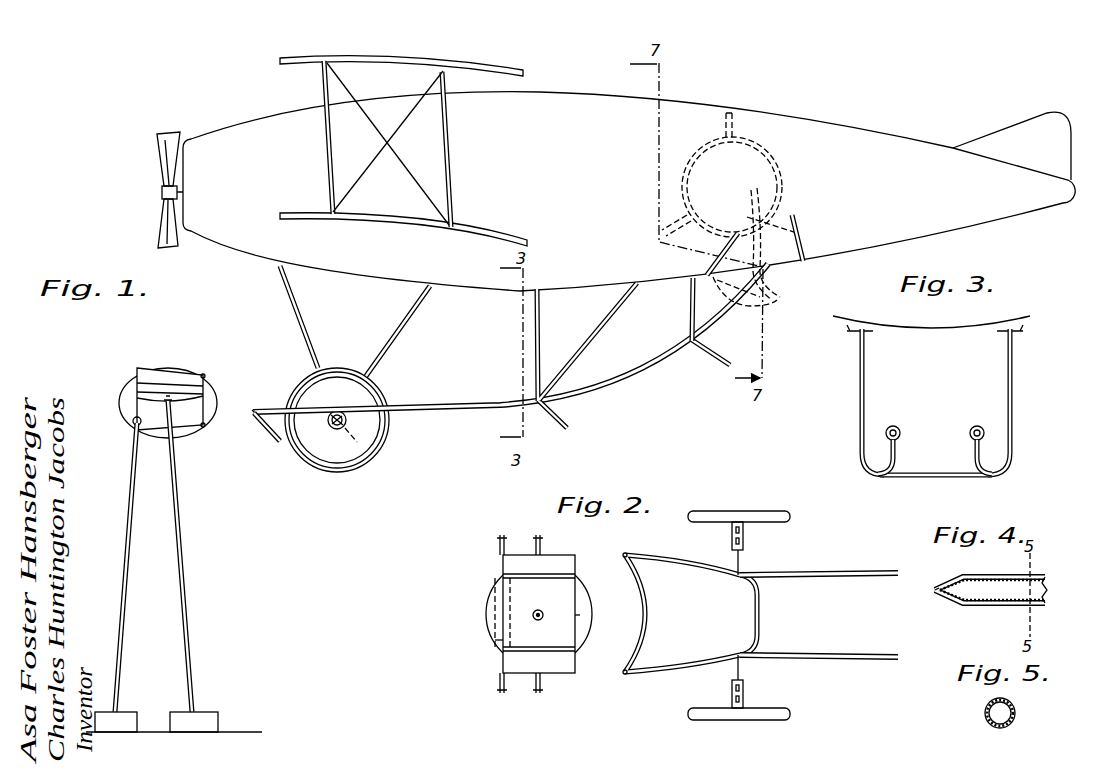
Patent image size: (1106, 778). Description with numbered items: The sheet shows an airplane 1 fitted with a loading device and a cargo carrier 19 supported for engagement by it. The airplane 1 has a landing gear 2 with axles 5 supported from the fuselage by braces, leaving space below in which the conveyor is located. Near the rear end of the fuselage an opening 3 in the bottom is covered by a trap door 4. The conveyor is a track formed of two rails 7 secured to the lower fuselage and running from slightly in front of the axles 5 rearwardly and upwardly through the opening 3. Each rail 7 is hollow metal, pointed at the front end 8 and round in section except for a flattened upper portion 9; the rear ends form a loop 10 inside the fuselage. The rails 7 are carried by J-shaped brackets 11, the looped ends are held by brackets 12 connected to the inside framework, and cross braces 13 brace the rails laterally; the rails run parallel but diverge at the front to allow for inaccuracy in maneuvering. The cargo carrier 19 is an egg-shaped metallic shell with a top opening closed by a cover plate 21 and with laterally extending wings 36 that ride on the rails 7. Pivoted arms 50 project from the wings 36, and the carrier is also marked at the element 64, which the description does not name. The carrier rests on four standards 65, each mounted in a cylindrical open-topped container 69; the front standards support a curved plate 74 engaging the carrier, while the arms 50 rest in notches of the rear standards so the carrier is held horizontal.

In FIG. 1, the airplane 1 is at (241, 128).
In FIG. 1, the landing gear 2 is at (312, 367).
In FIG. 1, the opening 3 is at (797, 264).
In FIG. 1, the trap door 4 is at (706, 266).
In FIG. 2, the axles 5 is at (744, 540).
In FIG. 1, the rails 7 is at (428, 409).
In FIG. 2, the rails 7 is at (835, 571).
In FIG. 4, the rails 7 is at (1012, 600).
In FIG. 5, the rails 7 is at (1016, 716).
In FIG. 1, the front end 8 is at (251, 404).
In FIG. 2, the front end 8 is at (620, 617).
In FIG. 4, the front end 8 is at (947, 600).
In FIG. 4, the flattened upper portion 9 is at (998, 577).
In FIG. 5, the flattened upper portion 9 is at (1012, 703).
In FIG. 1, the loop 10 is at (694, 162).
In FIG. 1, the J-shaped brackets 11 is at (541, 367).
In FIG. 3, the J-shaped brackets 11 is at (863, 403).
In FIG. 1, the brackets 12 is at (734, 134).
In FIG. 1, the cross braces 13 is at (272, 446).
In FIG. 2, the cross braces 13 is at (651, 619).
In FIG. 3, the cross braces 13 is at (935, 462).
In FIG. 1, the cargo carrier 19 is at (774, 303).
In FIG. 2, the cargo carrier 19 is at (493, 598).
In FIG. 2, the cover plate 21 is at (160, 372).
In FIG. 2, the wings 36 is at (200, 395).
In FIG. 2, the arm 50 is at (542, 541).
In FIG. 2, the pivot 64 is at (204, 375).
In FIG. 2, the standards 65 is at (181, 578).
In FIG. 2, the container 69 is at (136, 714).
In FIG. 2, the plate 74 is at (131, 426).